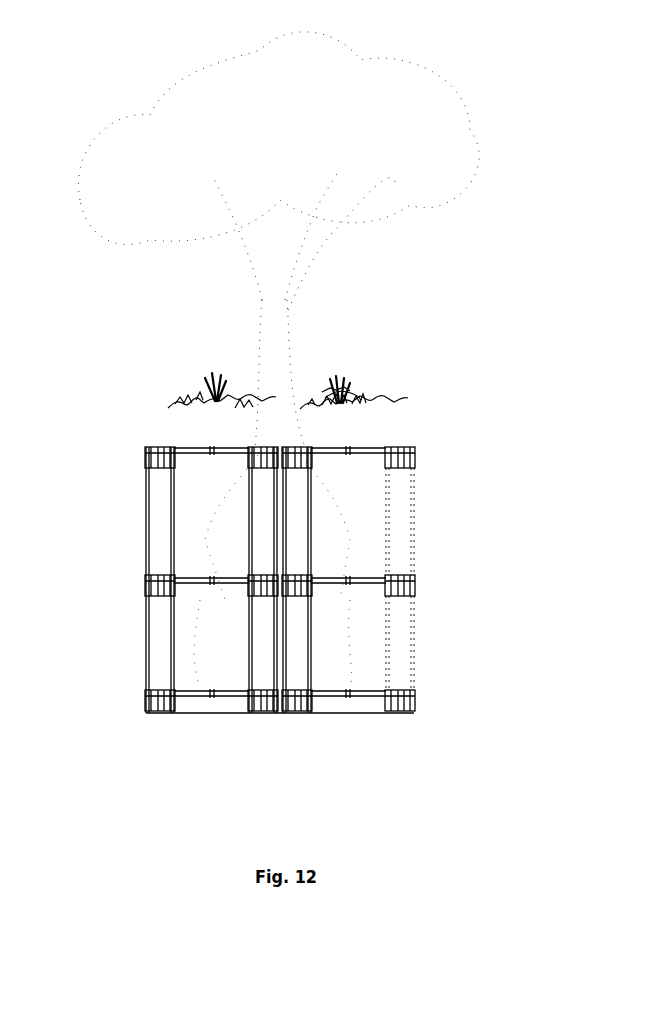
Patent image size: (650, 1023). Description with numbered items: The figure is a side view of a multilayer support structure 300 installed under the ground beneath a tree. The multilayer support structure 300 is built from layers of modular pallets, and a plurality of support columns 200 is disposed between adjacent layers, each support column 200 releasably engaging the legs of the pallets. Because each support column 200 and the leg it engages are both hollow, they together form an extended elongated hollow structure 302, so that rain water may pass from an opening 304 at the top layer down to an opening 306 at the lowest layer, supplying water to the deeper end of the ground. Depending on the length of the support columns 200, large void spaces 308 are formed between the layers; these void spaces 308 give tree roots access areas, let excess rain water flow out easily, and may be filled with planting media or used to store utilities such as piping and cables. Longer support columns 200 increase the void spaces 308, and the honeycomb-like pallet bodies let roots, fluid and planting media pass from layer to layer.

The multilayer support structure 300 is at (108, 445).
The extended elongated hollow structure 302 is at (415, 480).
The opening at the top layer 304 is at (398, 445).
The opening at the lowest layer 306 is at (397, 713).
The support column 200 is at (397, 532).
The void space 308 is at (225, 518).